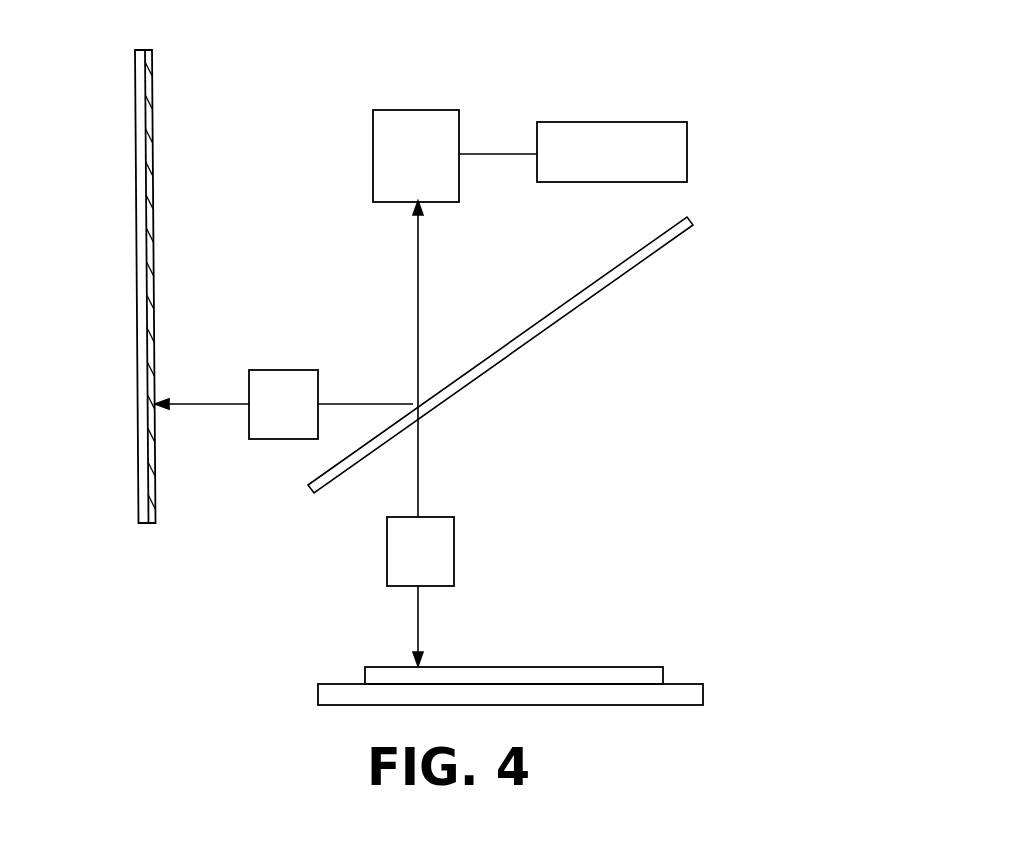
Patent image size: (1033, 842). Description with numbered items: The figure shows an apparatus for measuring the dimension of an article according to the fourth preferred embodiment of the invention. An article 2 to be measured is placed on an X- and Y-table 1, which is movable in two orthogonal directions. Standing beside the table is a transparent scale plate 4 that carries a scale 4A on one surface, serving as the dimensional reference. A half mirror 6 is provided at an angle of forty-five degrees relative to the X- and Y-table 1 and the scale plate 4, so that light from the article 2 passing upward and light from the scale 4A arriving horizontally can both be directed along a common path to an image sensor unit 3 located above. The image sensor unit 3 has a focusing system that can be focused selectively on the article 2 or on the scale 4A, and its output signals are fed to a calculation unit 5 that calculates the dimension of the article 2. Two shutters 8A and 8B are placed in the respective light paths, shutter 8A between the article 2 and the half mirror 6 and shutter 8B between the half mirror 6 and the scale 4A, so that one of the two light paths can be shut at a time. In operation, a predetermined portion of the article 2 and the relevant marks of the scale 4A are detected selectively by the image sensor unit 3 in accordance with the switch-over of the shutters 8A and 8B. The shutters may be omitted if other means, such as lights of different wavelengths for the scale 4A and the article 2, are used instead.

The X- and Y-table 1 is at (678, 706).
The article 2 is at (667, 672).
The image sensor unit 3 is at (372, 168).
The scale plate 4 is at (138, 490).
The scale 4A is at (148, 232).
The calculation unit 5 is at (605, 121).
The half mirror 6 is at (652, 258).
The shutter 8A is at (455, 561).
The shutter 8B is at (278, 370).